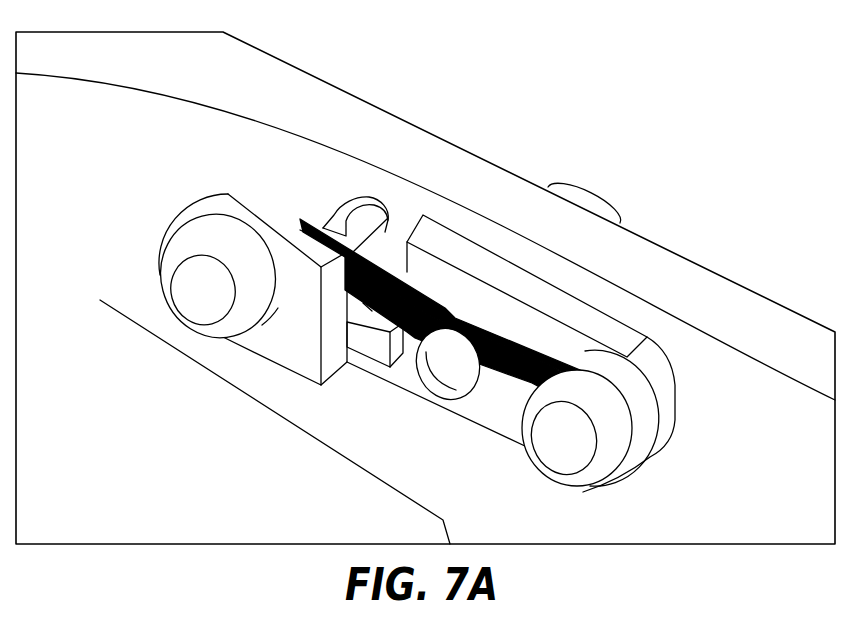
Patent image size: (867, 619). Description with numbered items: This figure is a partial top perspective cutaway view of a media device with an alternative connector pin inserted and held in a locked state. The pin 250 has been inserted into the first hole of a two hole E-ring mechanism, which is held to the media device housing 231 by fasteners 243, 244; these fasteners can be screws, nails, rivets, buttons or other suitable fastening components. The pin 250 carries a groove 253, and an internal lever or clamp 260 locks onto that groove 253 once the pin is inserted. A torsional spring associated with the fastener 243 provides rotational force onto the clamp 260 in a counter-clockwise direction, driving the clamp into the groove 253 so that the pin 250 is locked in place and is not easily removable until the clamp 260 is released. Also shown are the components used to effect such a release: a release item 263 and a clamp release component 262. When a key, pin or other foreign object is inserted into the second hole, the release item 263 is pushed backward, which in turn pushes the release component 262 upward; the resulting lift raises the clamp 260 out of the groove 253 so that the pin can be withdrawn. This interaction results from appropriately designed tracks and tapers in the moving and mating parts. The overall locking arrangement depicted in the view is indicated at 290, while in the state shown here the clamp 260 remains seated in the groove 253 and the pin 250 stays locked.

The media device housing 231 is at (757, 452).
The fastener 243 is at (563, 452).
The fastener 244 is at (203, 312).
The pin 250 is at (615, 194).
The groove 253 is at (488, 383).
The clamp 260 is at (447, 312).
The clamp release component 262 is at (388, 217).
The release item 263 is at (373, 340).
The carriage assembly 290 is at (720, 84).